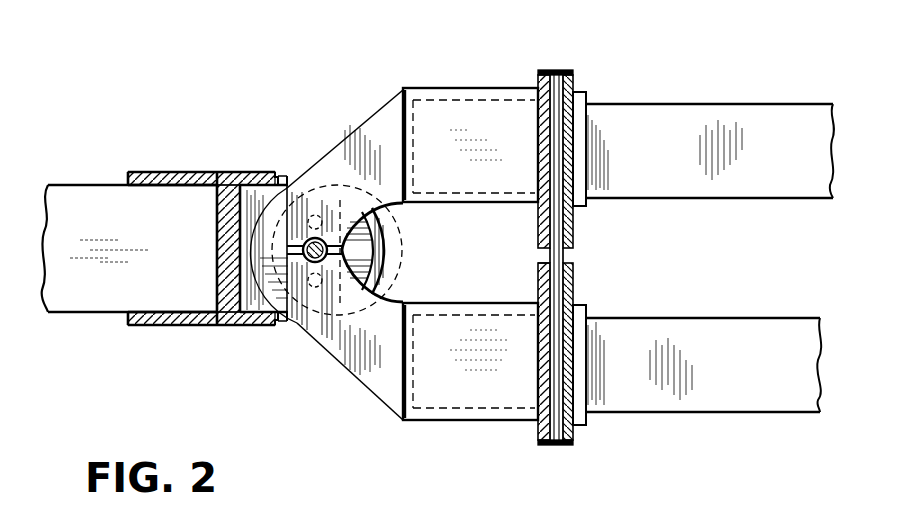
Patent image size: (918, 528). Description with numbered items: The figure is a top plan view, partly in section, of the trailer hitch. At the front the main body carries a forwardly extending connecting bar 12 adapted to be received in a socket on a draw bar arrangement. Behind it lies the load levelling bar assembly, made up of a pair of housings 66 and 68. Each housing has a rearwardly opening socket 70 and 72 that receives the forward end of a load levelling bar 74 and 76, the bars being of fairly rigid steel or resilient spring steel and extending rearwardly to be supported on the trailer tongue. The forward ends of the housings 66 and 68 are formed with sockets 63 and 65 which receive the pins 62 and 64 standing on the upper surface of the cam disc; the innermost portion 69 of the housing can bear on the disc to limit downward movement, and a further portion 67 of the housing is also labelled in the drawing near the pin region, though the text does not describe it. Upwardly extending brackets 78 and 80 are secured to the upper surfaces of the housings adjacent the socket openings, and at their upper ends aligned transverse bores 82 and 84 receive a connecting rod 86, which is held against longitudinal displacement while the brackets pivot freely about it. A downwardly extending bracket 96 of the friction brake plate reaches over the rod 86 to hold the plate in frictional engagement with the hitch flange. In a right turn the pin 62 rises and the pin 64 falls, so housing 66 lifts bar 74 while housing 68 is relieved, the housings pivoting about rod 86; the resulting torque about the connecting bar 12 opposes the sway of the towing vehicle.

The connecting bar 12 is at (106, 197).
The pin 62 is at (289, 262).
The socket 63 is at (312, 326).
The pin 64 is at (350, 194).
The socket 65 is at (300, 178).
The housing 66 is at (380, 395).
The lower fork portion 67 is at (292, 290).
The housing 68 is at (365, 135).
The innermost portion of the housing 69 is at (295, 218).
The socket 70 is at (470, 420).
The socket 72 is at (440, 100).
The load levelling bar 74 is at (680, 400).
The load levelling bar 76 is at (700, 182).
The bracket 78 is at (583, 320).
The bracket 80 is at (578, 92).
The bore 82 is at (548, 288).
The bore 84 is at (550, 95).
The connecting rod 86 is at (556, 258).
The bracket 96 is at (571, 236).